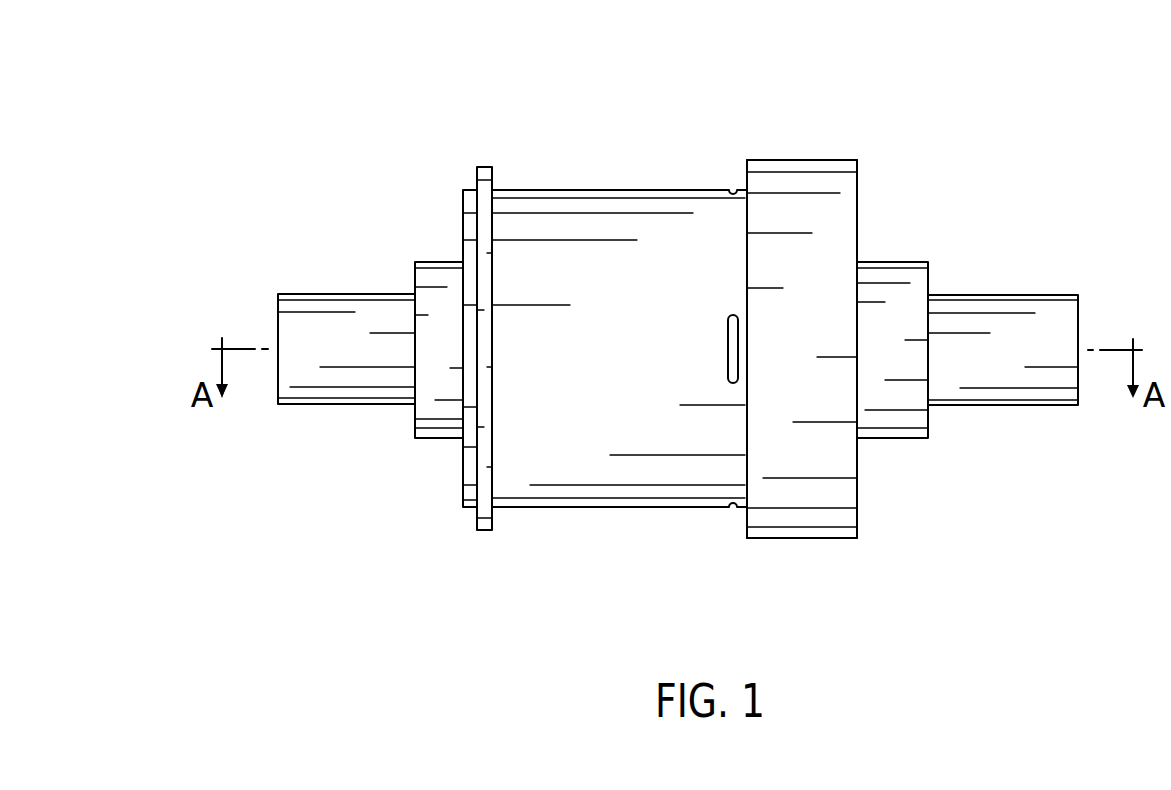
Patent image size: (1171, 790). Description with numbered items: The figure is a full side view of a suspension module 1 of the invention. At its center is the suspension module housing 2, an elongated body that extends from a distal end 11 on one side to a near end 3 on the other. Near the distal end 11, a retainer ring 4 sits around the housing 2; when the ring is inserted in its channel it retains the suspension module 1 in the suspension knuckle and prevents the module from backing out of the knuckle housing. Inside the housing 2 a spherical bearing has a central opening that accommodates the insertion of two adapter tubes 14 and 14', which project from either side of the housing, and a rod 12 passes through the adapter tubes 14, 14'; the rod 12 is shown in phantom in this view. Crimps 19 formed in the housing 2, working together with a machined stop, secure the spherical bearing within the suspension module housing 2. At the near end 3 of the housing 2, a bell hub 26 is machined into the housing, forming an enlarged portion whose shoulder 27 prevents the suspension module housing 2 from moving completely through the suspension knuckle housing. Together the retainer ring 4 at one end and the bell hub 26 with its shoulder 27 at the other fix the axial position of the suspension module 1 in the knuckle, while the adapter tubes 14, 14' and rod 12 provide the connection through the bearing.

The suspension module 1 is at (893, 120).
The suspension module housing 2 is at (838, 213).
The near end 3 is at (862, 242).
The retainer ring 4 is at (487, 167).
The distal end 11 is at (463, 202).
The rod 12 is at (318, 405).
The adapter tube 14 is at (407, 305).
The adapter tube 14' is at (929, 329).
The crimps 19 is at (733, 190).
The bell hub 26 is at (828, 538).
The shoulder 27 is at (746, 165).